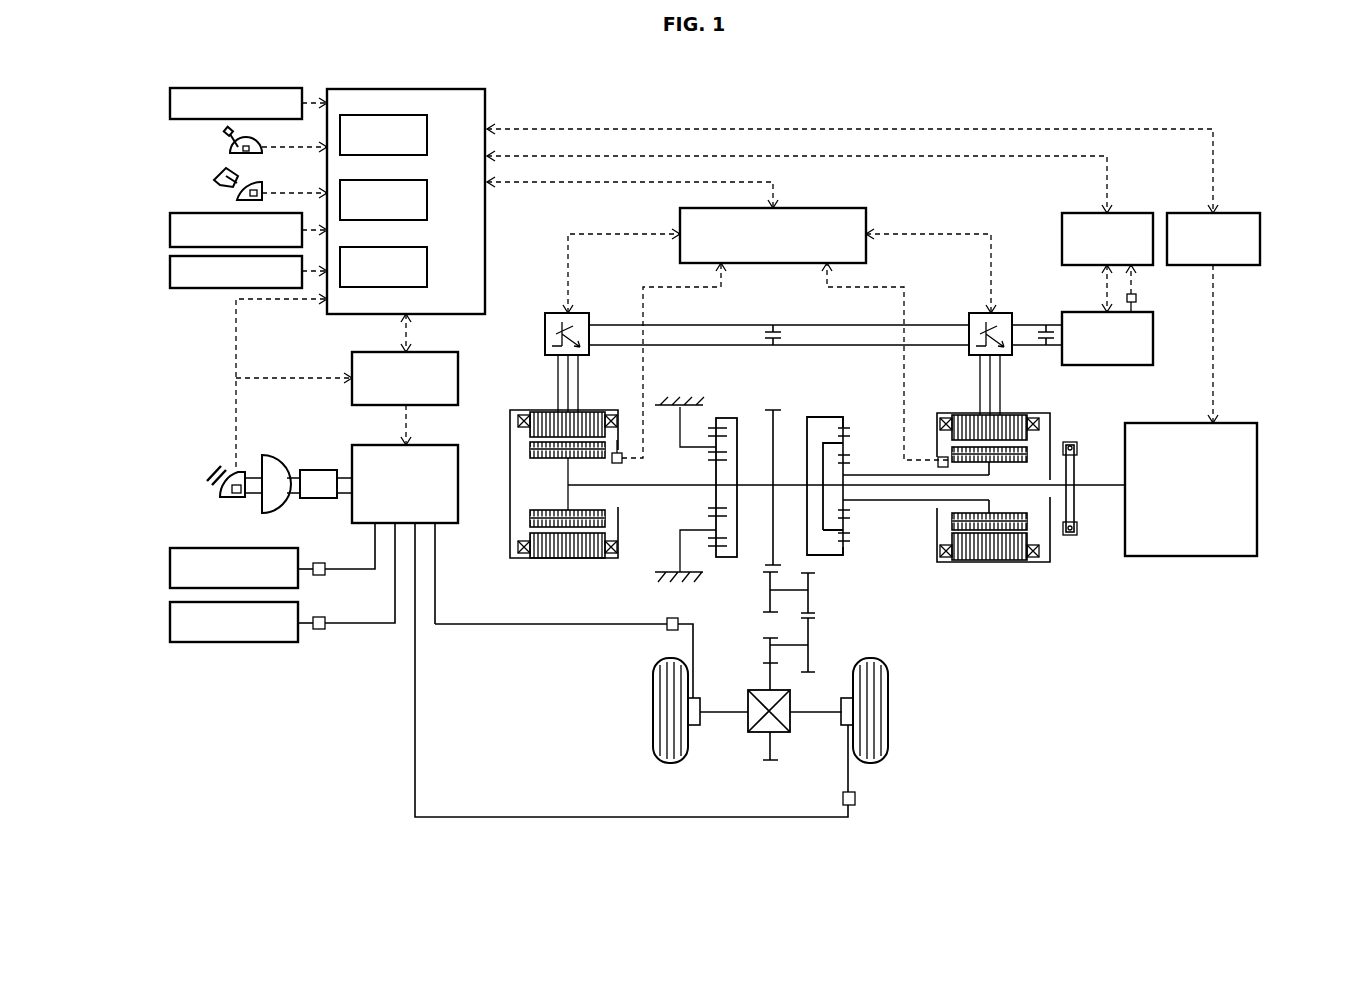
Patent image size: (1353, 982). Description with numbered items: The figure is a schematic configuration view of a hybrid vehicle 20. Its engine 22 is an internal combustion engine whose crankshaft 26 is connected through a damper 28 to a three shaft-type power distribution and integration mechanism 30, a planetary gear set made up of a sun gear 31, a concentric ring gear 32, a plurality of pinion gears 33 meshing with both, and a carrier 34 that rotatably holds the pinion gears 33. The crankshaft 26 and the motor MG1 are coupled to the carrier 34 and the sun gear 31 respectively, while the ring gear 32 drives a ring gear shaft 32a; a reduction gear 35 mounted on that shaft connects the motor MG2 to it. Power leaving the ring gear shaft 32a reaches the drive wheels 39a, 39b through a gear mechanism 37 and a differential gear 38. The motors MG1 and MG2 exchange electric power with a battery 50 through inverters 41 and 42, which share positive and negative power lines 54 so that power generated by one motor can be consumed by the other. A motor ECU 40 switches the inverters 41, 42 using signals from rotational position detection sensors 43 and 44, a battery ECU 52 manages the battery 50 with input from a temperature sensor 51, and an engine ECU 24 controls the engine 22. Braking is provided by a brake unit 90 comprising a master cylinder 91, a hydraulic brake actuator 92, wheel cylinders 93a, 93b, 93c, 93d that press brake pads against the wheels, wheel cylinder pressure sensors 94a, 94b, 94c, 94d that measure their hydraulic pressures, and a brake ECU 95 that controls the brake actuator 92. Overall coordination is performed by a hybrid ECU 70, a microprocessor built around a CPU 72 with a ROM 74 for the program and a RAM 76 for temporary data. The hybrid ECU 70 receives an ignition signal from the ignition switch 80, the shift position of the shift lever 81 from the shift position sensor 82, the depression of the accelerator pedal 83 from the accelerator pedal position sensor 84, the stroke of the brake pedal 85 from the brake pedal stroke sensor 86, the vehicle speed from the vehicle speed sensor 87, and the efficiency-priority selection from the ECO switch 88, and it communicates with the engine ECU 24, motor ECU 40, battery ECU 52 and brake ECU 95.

The hybrid vehicle 20 is at (1232, 120).
The engine 22 is at (1257, 488).
The engine electronic control unit 24 is at (1239, 213).
The crankshaft 26 is at (1093, 488).
The damper 28 is at (1068, 537).
The power distribution and integration mechanism 30 is at (898, 474).
The sun gear 31 is at (848, 508).
The ring gear 32 is at (848, 552).
The ring gear shaft 32a is at (753, 482).
The pinion gears 33 is at (848, 532).
The carrier 34 is at (822, 460).
The reduction gear 35 is at (720, 412).
The gear mechanism 37 is at (822, 632).
The differential gear 38 is at (758, 690).
The wheel 39a is at (653, 712).
The wheel 39b is at (888, 712).
The motor electronic control unit 40 is at (861, 208).
The inverter 41 is at (1012, 313).
The inverter 42 is at (592, 313).
The rotational position detection sensor 43 is at (938, 457).
The rotational position detection sensor 44 is at (617, 453).
The battery 50 is at (1062, 360).
The temperature sensor 51 is at (1136, 297).
The battery electronic control unit 52 is at (1145, 213).
The power lines 54 is at (752, 334).
The hybrid electronic control unit 70 is at (410, 89).
The CPU 72 is at (427, 133).
The ROM 74 is at (427, 200).
The RAM 76 is at (427, 267).
The ignition switch 80 is at (170, 103).
The shift lever 81 is at (227, 131).
The shift position sensor 82 is at (240, 150).
The accelerator pedal 83 is at (226, 172).
The accelerator pedal position sensor 84 is at (250, 193).
The brake pedal 85 is at (215, 475).
The brake pedal stroke sensor 86 is at (232, 489).
The vehicle speed sensor 87 is at (170, 232).
The ECO switch 88 is at (170, 272).
The brake unit 90 is at (370, 697).
The master cylinder 91 is at (330, 470).
The brake actuator 92 is at (437, 525).
The wheel cylinder 93a is at (700, 725).
The wheel cylinder 93b is at (842, 725).
The wheel cylinder 93c is at (170, 568).
The wheel cylinder 93d is at (170, 622).
The wheel cylinder pressure sensor 94a is at (667, 627).
The wheel cylinder pressure sensor 94b is at (855, 797).
The wheel cylinder pressure sensor 94c is at (325, 572).
The wheel cylinder pressure sensor 94d is at (325, 626).
The brake electronic control unit 95 is at (458, 378).
The motor MG1 is at (990, 561).
The motor MG2 is at (560, 558).